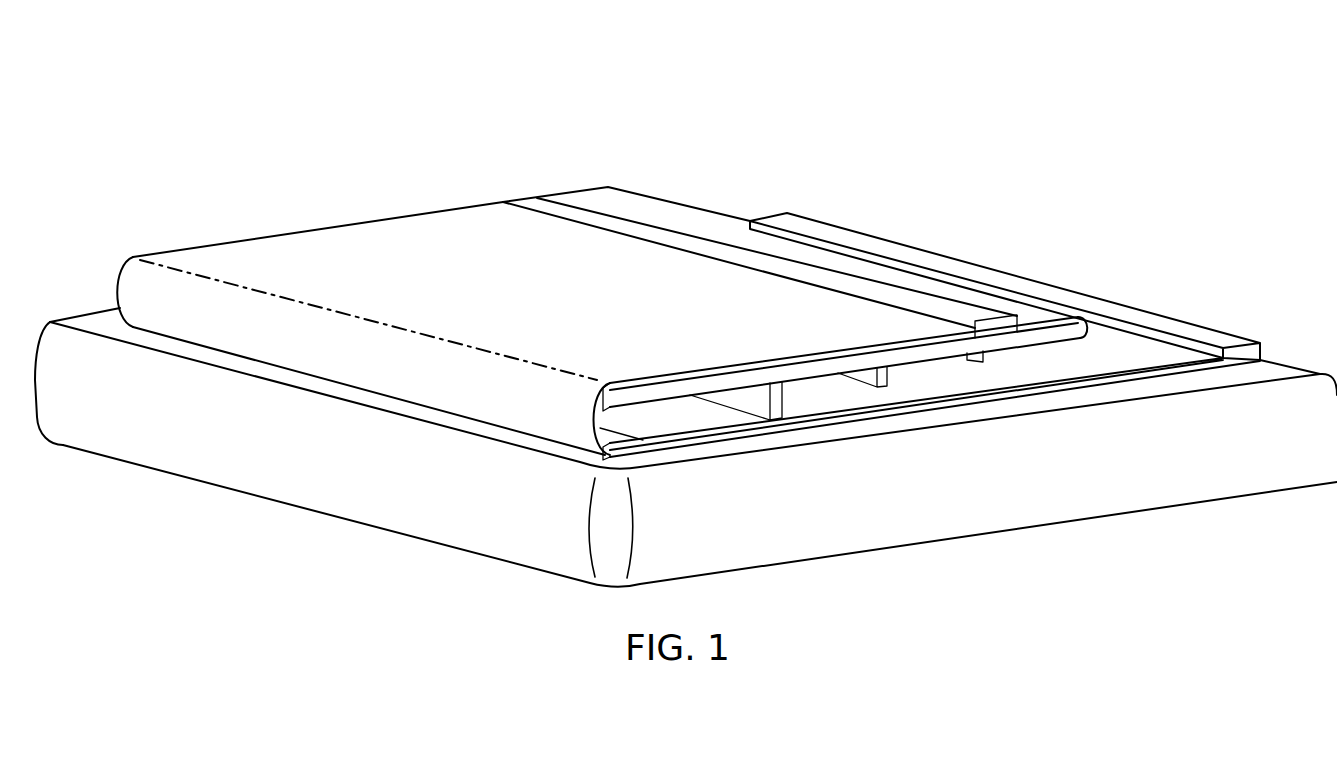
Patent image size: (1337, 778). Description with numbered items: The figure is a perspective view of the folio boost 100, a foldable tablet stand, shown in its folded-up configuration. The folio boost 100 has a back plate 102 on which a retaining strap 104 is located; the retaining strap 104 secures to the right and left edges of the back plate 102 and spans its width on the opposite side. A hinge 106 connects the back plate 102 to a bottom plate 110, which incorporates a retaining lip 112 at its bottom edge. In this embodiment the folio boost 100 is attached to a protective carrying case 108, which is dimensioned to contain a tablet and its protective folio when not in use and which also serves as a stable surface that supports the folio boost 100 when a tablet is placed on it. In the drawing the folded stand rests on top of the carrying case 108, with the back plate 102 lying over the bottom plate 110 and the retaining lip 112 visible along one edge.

The folio boost 100 is at (1008, 95).
The back plate 102 is at (300, 228).
The retaining strap 104 is at (537, 198).
The hinge 106 is at (135, 277).
The protective carrying case 108 is at (915, 546).
The bottom plate 110 is at (1133, 361).
The retaining lip 112 is at (1182, 327).